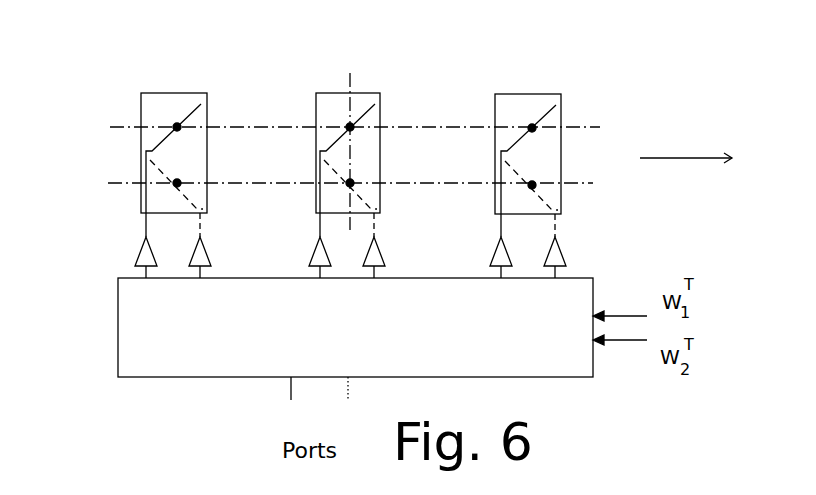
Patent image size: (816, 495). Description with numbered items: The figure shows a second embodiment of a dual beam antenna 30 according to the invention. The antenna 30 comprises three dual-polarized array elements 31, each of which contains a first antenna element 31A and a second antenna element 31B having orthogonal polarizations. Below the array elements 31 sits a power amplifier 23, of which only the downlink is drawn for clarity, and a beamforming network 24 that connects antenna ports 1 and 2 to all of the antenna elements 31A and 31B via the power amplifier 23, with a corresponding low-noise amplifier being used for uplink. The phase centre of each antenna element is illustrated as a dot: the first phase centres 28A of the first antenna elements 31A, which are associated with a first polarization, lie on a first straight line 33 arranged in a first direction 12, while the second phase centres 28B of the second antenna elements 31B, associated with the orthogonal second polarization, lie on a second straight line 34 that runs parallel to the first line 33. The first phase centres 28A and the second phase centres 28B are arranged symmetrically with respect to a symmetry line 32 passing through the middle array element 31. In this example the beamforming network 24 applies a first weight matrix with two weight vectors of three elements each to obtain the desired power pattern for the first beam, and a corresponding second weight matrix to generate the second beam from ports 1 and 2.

The antenna 30 is at (88, 52).
The dual-polarized array element 31 is at (158, 93).
The first antenna element 31A is at (200, 110).
The second antenna element 31B is at (147, 183).
The first phase centre 28A is at (532, 128).
The second phase centre 28B is at (350, 184).
The symmetry line 32 is at (350, 75).
The first straight line 33 is at (593, 128).
The second straight line 34 is at (580, 185).
The first direction 12 is at (686, 147).
The power amplifier 23 is at (137, 256).
The beamforming network 24 is at (118, 330).
The antenna port 1 is at (292, 404).
The antenna port 2 is at (345, 404).